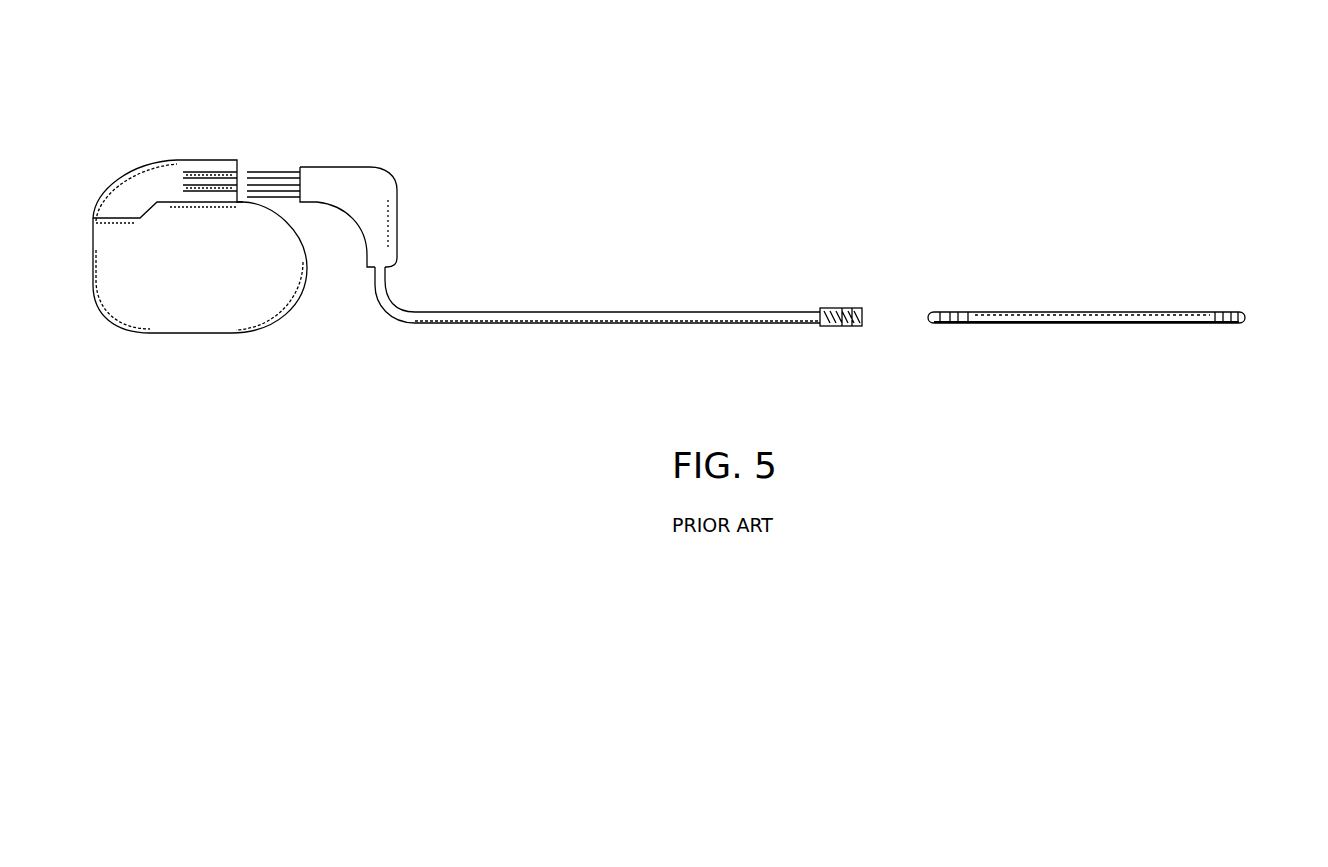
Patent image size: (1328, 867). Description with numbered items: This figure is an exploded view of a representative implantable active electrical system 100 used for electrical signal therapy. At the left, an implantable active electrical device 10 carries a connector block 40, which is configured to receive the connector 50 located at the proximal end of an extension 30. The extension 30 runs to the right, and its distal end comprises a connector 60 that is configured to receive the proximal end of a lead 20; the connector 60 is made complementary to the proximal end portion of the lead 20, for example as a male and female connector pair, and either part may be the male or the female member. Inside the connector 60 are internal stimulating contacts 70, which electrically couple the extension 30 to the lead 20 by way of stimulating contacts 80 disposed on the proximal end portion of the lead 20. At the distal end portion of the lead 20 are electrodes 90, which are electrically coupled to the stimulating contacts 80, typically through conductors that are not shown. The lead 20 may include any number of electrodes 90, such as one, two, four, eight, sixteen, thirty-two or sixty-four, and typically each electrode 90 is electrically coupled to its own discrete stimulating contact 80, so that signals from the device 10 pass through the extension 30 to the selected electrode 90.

The implantable active electrical system 100 is at (746, 103).
The implantable active electrical device 10 is at (242, 333).
The connector block 40 is at (160, 163).
The connector 50 is at (358, 167).
The extension 30 is at (530, 311).
The connector 60 is at (832, 308).
The internal stimulating contacts 70 is at (850, 308).
The lead 20 is at (1133, 310).
The stimulating contacts 80 is at (945, 312).
The electrodes 90 is at (1215, 312).